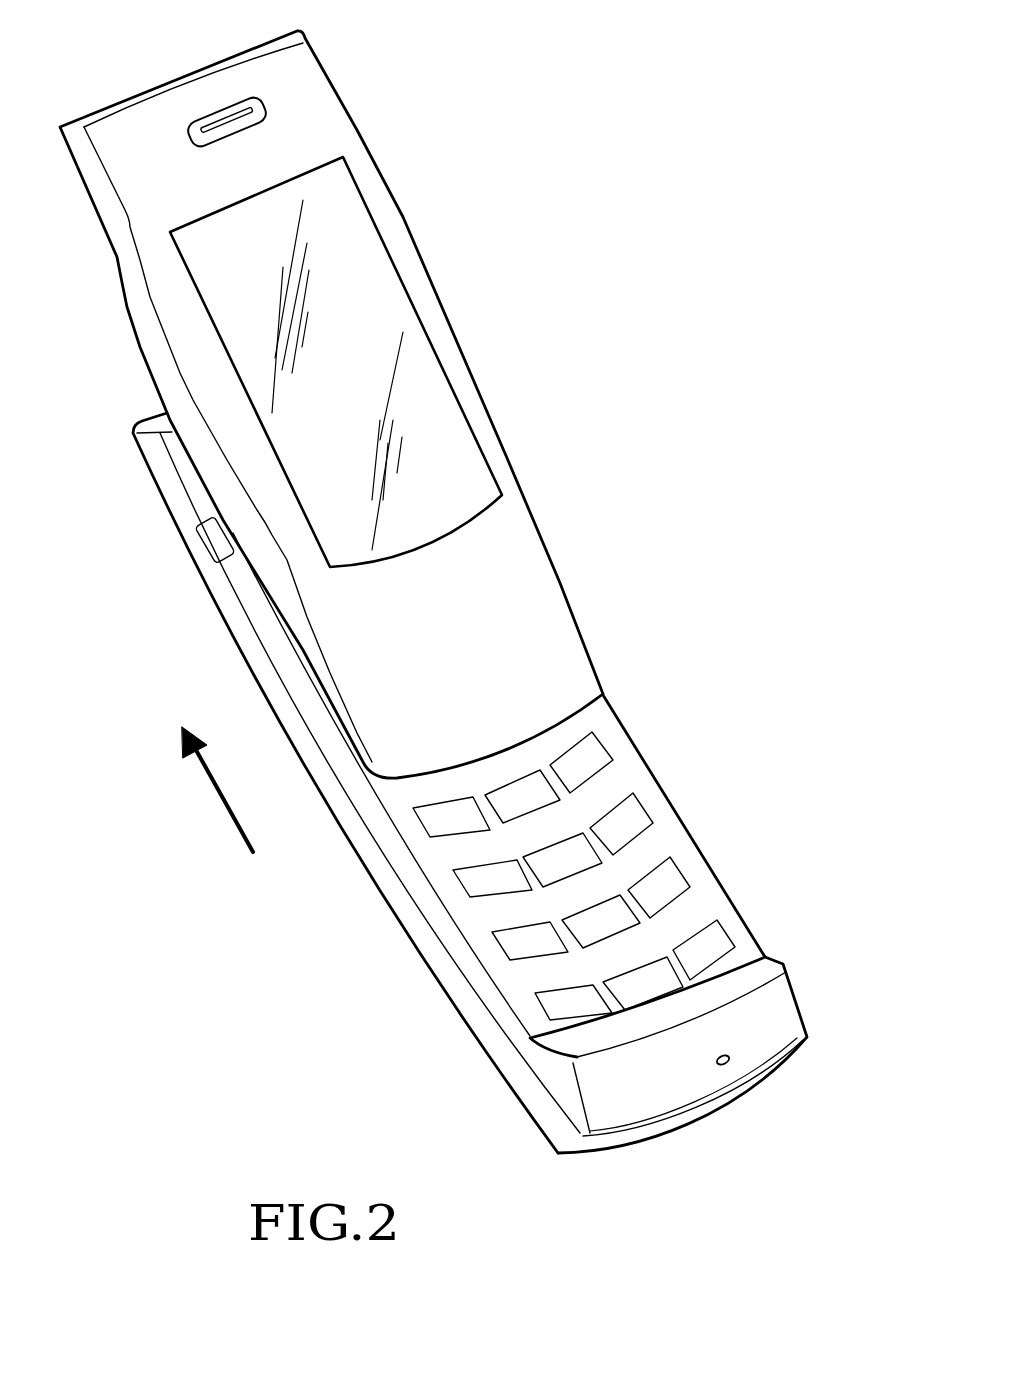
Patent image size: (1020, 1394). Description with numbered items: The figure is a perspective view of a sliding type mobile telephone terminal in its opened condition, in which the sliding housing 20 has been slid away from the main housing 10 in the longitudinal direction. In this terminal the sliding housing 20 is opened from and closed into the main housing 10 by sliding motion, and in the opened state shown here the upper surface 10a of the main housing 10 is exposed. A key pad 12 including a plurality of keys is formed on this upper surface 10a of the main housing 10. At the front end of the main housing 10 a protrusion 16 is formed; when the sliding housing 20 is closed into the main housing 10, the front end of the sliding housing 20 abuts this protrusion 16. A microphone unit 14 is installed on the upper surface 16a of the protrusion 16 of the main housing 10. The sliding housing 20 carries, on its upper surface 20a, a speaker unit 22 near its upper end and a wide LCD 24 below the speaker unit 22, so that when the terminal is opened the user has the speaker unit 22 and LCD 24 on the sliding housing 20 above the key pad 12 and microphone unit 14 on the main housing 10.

The main housing 10 is at (676, 800).
The upper surface of the main housing 10a is at (703, 902).
The key pad 12 is at (592, 757).
The microphone unit 14 is at (723, 1064).
The protrusion 16 is at (777, 1018).
The upper surface of the protrusion 16a is at (633, 1087).
The sliding housing 20 is at (384, 136).
The upper surface of the sliding housing 20a is at (527, 593).
The speaker unit 22 is at (225, 117).
The wide LCD 24 is at (447, 440).